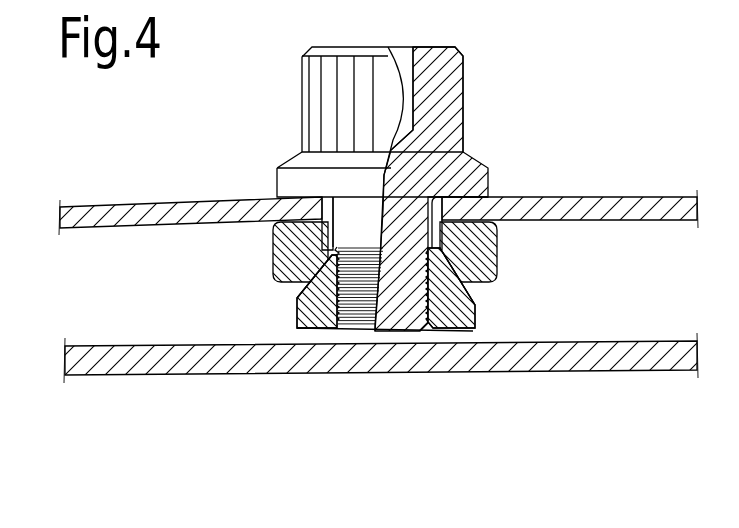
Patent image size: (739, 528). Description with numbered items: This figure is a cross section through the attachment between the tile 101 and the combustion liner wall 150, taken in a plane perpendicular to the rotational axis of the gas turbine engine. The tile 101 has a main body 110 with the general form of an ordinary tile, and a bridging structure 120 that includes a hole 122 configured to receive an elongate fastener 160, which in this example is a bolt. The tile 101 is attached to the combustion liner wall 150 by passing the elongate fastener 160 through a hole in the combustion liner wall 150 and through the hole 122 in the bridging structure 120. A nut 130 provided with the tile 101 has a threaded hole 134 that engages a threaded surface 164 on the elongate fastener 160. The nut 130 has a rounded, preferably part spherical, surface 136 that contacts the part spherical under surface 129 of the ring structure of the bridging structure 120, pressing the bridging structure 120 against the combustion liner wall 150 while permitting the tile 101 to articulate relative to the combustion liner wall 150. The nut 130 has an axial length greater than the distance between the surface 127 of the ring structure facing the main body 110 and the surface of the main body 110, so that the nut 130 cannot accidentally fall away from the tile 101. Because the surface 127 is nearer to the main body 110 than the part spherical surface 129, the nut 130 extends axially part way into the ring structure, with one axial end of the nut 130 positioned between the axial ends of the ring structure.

The tile 101 is at (111, 397).
The main body 110 is at (592, 357).
The combustion liner wall 150 is at (537, 203).
The elongate fastener 160 is at (350, 160).
The bridging structure 120 is at (268, 206).
The part spherical under surface 129 is at (293, 250).
The hole 122 is at (441, 232).
The surface of the ring structure 127 is at (275, 288).
The nut 130 is at (455, 305).
The threaded surface 164 is at (445, 287).
The threaded hole 134 is at (362, 288).
The rounded surface 136 is at (297, 306).